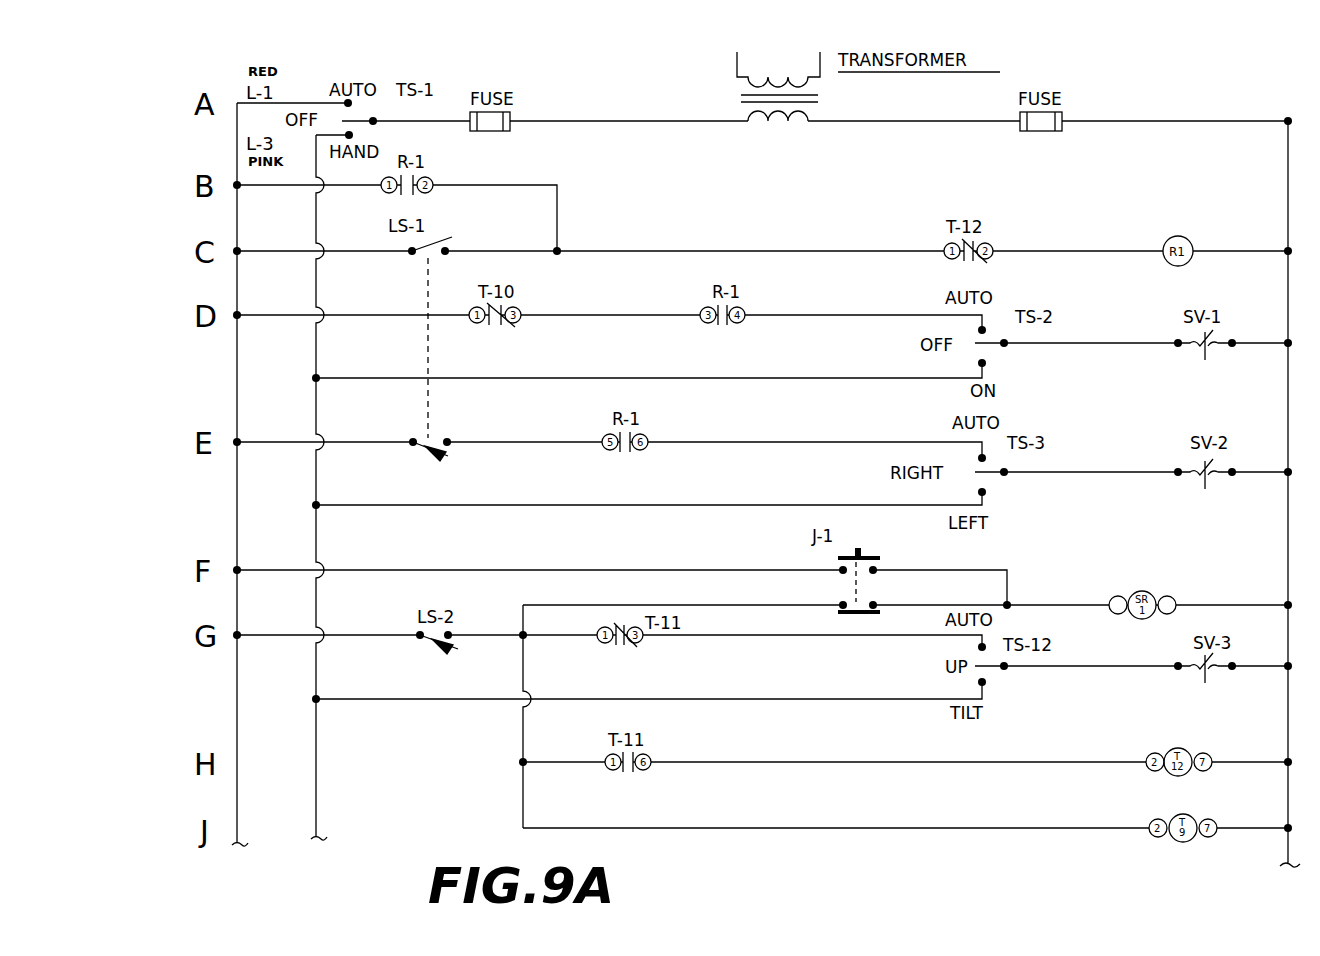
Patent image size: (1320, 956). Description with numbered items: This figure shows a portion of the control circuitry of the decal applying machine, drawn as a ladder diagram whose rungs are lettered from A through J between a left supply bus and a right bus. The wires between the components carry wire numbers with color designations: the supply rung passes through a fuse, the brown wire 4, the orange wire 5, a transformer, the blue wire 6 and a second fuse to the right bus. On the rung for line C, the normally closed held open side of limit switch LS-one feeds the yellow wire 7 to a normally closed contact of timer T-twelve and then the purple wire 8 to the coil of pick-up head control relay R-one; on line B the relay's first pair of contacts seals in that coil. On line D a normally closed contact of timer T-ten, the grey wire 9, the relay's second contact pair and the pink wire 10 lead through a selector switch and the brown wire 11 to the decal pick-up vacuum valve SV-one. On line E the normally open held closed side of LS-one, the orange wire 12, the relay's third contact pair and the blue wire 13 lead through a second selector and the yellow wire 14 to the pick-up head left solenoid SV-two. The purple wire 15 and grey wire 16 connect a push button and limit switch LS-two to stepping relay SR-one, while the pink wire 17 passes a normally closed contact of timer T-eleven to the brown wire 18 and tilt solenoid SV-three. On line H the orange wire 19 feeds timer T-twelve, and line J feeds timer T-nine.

The wire 4 brown 4 is at (421, 112).
The wire 5 orange 5 is at (629, 112).
The wire 6 blue 6 is at (914, 112).
The wire 7 yellow 7 is at (694, 242).
The wire 8 purple 8 is at (1078, 242).
The wire 9 grey 9 is at (610, 305).
The wire 10 pink 10 is at (863, 313).
The wire 11 brown 11 is at (1091, 334).
The wire 12 orange 12 is at (524, 432).
The wire 13 blue 13 is at (815, 440).
The wire 14 yellow 14 is at (1091, 463).
The wire 15 purple 15 is at (940, 579).
The wire 16 grey 16 is at (683, 595).
The wire 17 pink 17 is at (812, 633).
The wire 18 brown 18 is at (1091, 658).
The wire 19 orange 19 is at (898, 754).